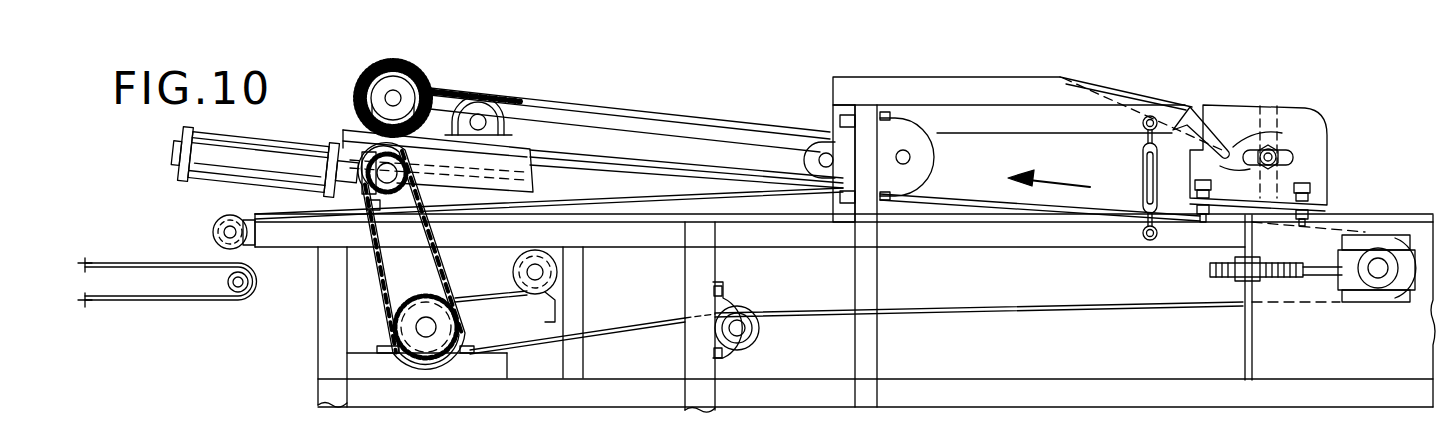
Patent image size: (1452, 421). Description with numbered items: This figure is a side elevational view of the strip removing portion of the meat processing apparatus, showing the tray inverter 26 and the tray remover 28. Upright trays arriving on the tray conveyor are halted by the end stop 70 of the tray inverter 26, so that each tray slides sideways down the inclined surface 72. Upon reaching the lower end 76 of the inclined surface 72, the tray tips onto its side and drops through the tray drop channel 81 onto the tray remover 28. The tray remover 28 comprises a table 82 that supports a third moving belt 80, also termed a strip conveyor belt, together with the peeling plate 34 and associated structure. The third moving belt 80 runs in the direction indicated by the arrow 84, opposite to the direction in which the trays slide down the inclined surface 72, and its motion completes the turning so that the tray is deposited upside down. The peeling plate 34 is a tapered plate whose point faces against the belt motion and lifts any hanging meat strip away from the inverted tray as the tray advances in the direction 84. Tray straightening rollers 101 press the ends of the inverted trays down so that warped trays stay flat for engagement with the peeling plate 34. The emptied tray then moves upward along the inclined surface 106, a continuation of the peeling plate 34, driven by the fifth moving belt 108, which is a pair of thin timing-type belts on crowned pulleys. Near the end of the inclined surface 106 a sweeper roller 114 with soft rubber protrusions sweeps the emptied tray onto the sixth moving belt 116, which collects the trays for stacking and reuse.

The tray inverter 26 is at (1205, 93).
The tray remover 28 is at (731, 112).
The peeling plate 34 is at (660, 160).
The end stop 70 is at (835, 77).
The inclined surface 72 is at (1095, 93).
The lower end 76 is at (1280, 158).
The third moving belt 80 is at (1005, 311).
The tray drop channel 81 is at (1208, 190).
The table 82 is at (1045, 248).
The direction of motion arrow 84 is at (1056, 180).
The tray straightening rollers 101 is at (938, 148).
The inclined surface 106 is at (548, 160).
The fifth moving belt 108 is at (584, 104).
The sweeper roller 114 is at (350, 86).
The sixth moving belt 116 is at (262, 150).